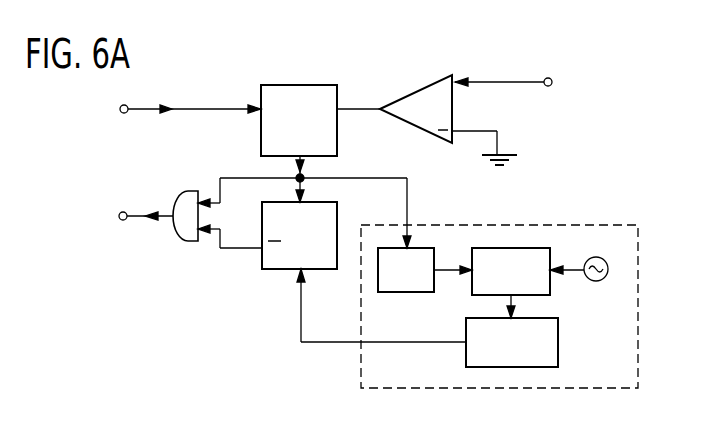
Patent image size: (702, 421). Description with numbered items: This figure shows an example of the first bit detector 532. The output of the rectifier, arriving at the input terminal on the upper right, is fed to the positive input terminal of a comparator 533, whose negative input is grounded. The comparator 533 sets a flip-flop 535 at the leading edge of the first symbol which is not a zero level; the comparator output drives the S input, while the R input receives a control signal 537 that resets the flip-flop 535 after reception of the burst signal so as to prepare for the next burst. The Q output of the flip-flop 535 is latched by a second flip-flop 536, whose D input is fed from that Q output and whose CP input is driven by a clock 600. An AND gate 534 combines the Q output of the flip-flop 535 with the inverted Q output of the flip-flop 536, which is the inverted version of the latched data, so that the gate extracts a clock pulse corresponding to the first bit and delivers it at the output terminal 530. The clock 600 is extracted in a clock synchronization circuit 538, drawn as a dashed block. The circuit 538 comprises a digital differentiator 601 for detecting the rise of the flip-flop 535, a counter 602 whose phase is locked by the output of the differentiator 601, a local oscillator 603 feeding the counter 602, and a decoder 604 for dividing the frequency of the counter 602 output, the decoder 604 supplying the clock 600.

The output terminal 530 is at (138, 222).
The first bit detector 532 is at (519, 56).
The comparator 533 is at (407, 92).
The AND gate 534 is at (177, 203).
The flip-flop 535 is at (292, 85).
The flip-flop 536 is at (268, 271).
The control signal 537 is at (187, 107).
The clock synchronization circuit 538 is at (527, 222).
The clock 600 is at (338, 344).
The digital differentiator 601 is at (410, 294).
The counter 602 is at (553, 297).
The local oscillator 603 is at (608, 282).
The decoder 604 is at (560, 343).